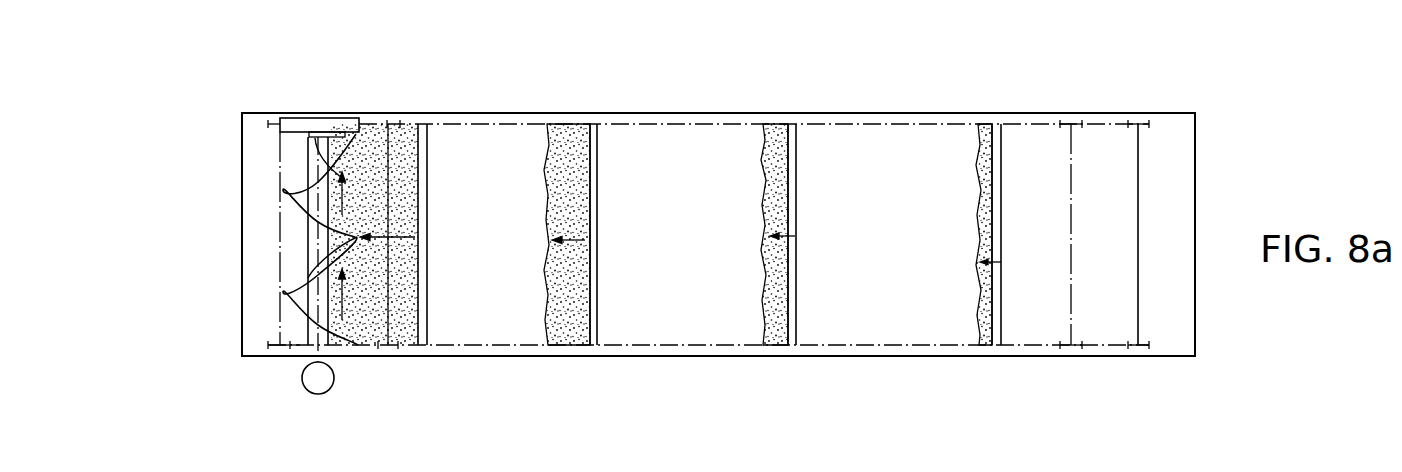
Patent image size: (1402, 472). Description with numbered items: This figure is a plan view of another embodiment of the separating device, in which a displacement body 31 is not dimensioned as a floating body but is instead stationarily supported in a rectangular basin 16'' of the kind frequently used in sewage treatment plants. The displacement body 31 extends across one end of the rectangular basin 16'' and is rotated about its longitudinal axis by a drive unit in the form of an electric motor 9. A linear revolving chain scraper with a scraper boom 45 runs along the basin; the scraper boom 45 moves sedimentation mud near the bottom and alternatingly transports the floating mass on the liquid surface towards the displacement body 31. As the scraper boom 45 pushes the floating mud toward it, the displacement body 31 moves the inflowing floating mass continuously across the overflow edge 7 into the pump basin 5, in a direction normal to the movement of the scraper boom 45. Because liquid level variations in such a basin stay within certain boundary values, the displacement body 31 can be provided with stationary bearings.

The pump basin 5 is at (292, 122).
The displacement body 31 is at (312, 145).
The overflow edge 7 is at (318, 163).
The scraper boom 45 is at (596, 152).
The rectangular basin 16'' is at (708, 184).
The electric motor 9 is at (320, 382).